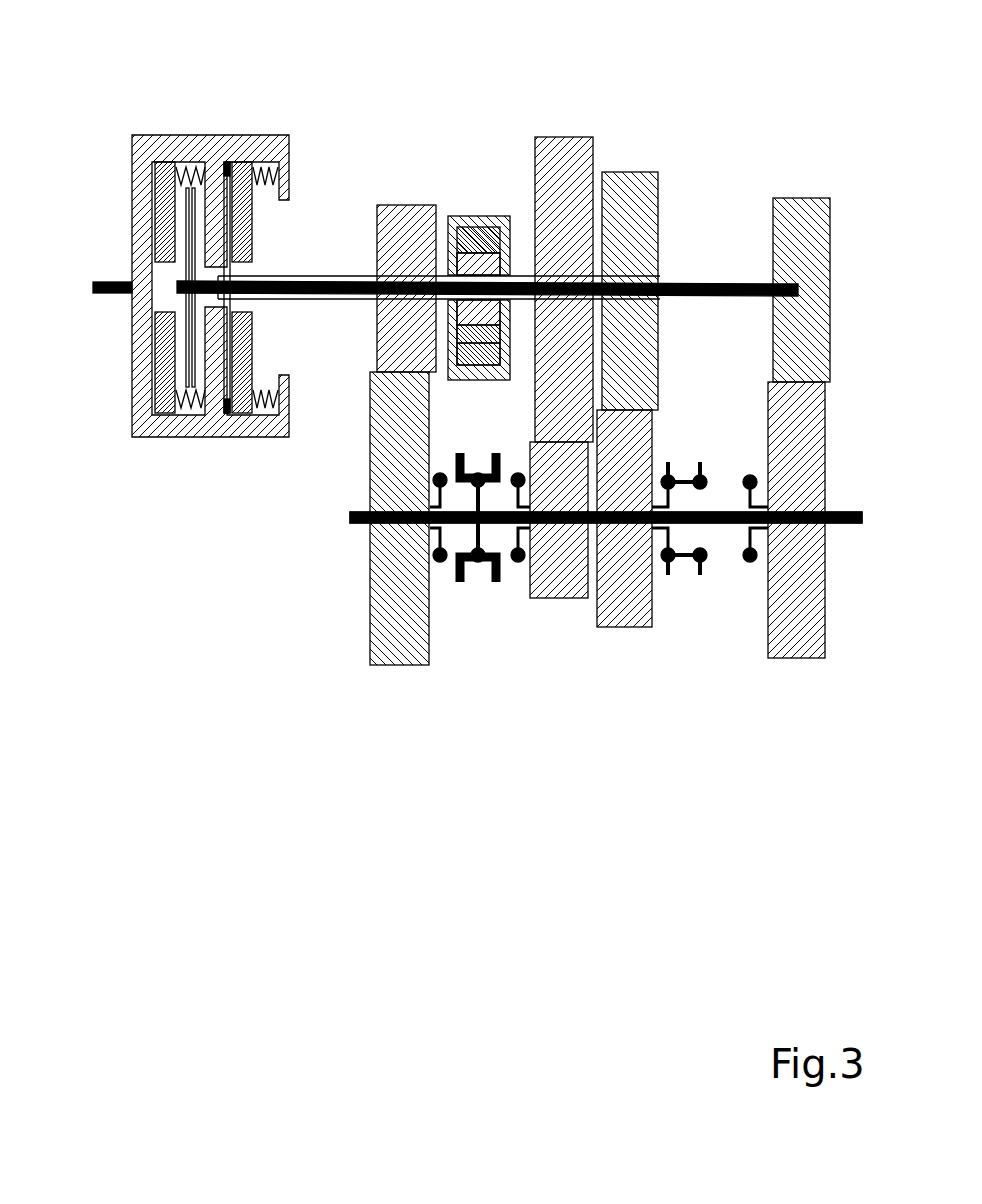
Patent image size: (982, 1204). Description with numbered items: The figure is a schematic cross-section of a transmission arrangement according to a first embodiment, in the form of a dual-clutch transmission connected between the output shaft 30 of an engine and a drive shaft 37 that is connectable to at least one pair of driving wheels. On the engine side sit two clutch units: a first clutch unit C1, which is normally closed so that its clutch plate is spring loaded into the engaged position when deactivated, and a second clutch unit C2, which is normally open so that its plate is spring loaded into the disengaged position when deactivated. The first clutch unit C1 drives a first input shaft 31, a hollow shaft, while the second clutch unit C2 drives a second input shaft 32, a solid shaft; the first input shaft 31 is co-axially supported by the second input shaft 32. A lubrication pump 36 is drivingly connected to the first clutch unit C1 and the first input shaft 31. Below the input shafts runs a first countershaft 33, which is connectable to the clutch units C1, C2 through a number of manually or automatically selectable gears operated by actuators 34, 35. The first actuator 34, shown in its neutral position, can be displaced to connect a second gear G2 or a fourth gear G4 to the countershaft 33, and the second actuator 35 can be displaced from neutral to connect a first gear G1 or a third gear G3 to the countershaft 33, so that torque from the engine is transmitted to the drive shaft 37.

The output shaft 30 is at (98, 294).
The first input shaft 31 is at (305, 276).
The second input shaft 32 is at (178, 284).
The first countershaft 33 is at (357, 523).
The first actuator 34 is at (478, 594).
The second actuator 35 is at (684, 590).
The lubrication pump 36 is at (484, 215).
The drive shaft 37 is at (836, 512).
The first clutch unit C1 is at (257, 108).
The second clutch unit C2 is at (196, 108).
The first gear G1 is at (795, 660).
The second gear G2 is at (395, 667).
The third gear G3 is at (620, 627).
The fourth gear G4 is at (552, 599).